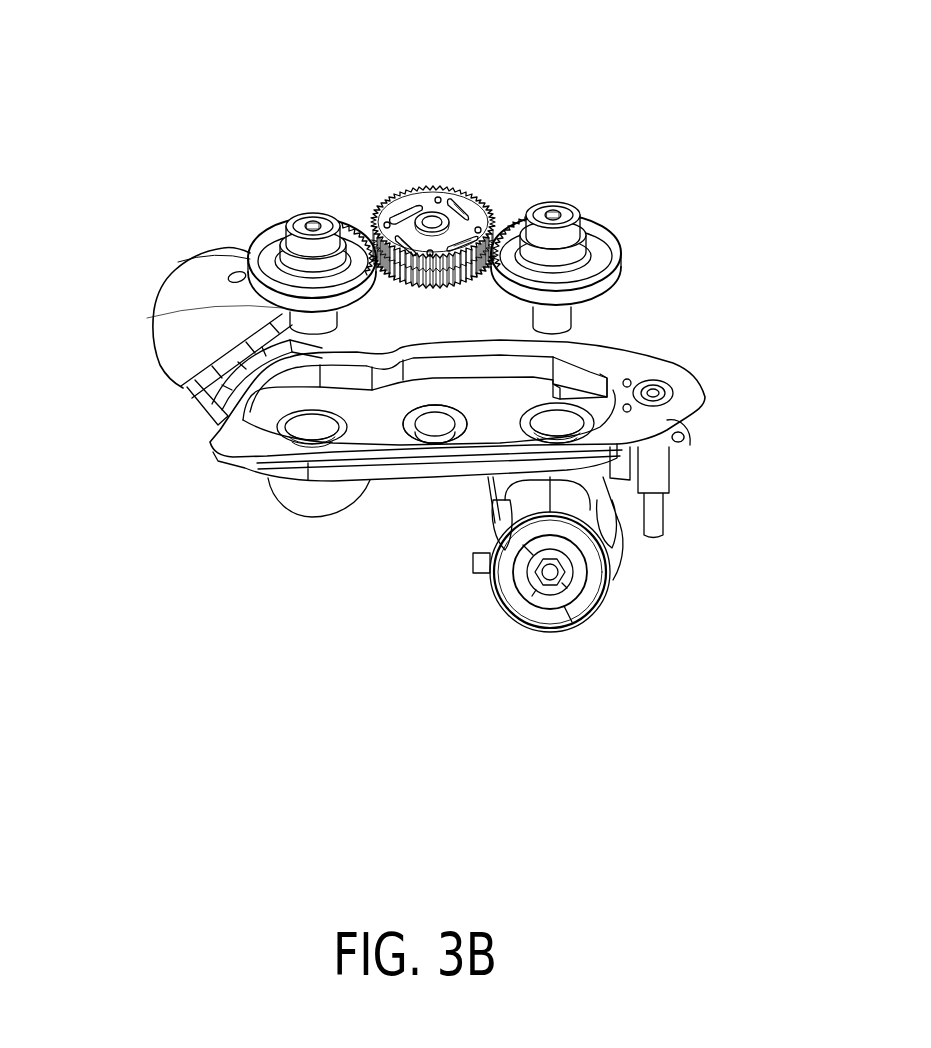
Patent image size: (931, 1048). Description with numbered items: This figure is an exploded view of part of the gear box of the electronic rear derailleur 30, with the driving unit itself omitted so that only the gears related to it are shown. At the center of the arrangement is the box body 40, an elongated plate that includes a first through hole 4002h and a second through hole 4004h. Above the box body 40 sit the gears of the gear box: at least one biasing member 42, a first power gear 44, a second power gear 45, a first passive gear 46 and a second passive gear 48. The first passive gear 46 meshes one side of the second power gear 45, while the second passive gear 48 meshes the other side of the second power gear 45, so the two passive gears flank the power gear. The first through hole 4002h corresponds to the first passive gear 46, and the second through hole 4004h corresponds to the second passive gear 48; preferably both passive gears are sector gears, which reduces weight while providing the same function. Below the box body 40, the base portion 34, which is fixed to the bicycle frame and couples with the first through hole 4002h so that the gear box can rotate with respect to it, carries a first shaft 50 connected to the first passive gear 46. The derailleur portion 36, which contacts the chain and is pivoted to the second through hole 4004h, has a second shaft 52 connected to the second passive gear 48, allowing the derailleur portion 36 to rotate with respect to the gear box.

The electronic rear derailleur 30 is at (613, 163).
The base portion 34 is at (617, 555).
The derailleur portion 36 is at (307, 507).
The box body 40 is at (660, 372).
The biasing member 42 is at (403, 213).
The first power gear 44 is at (470, 208).
The second power gear 45 is at (433, 432).
The first passive gear 46 is at (512, 220).
The second passive gear 48 is at (357, 240).
The first shaft 50 is at (570, 322).
The second shaft 52 is at (257, 291).
The first through hole 4002h is at (590, 402).
The second through hole 4004h is at (293, 421).